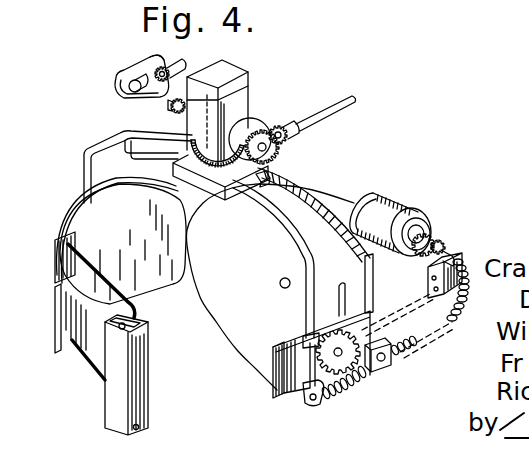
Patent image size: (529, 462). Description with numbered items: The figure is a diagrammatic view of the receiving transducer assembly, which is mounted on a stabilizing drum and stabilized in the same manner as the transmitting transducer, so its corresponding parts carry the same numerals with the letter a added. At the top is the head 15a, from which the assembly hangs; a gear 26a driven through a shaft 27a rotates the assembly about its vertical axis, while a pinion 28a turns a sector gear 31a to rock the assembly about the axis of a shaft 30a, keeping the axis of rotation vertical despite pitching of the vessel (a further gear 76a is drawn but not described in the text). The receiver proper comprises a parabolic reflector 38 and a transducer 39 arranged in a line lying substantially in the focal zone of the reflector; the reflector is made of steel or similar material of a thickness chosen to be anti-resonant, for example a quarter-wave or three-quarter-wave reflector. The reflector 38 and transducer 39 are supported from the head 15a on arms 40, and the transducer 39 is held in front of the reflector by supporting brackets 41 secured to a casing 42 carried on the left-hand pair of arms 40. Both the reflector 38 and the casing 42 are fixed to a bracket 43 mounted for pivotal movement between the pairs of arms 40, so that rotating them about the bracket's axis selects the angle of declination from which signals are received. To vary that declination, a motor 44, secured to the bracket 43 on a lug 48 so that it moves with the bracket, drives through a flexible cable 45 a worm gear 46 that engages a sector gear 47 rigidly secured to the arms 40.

The head 15a is at (217, 112).
The gear 26a is at (180, 170).
The shaft 27a is at (337, 100).
The pinion 28a is at (168, 56).
The shaft 30a is at (171, 106).
The sector gear 31a is at (148, 62).
The gear wheel 76a is at (253, 118).
The parabolic reflector 38 is at (307, 203).
The transducer 39 is at (150, 395).
The arms 40 is at (120, 137).
The supporting brackets 41 is at (138, 307).
The casing 42 is at (120, 240).
The bracket 43 is at (283, 338).
The motor 44 is at (402, 229).
The flexible cable 45 is at (462, 313).
The worm gear 46 is at (347, 388).
The sector gear 47 is at (338, 353).
The lug 48 is at (451, 256).